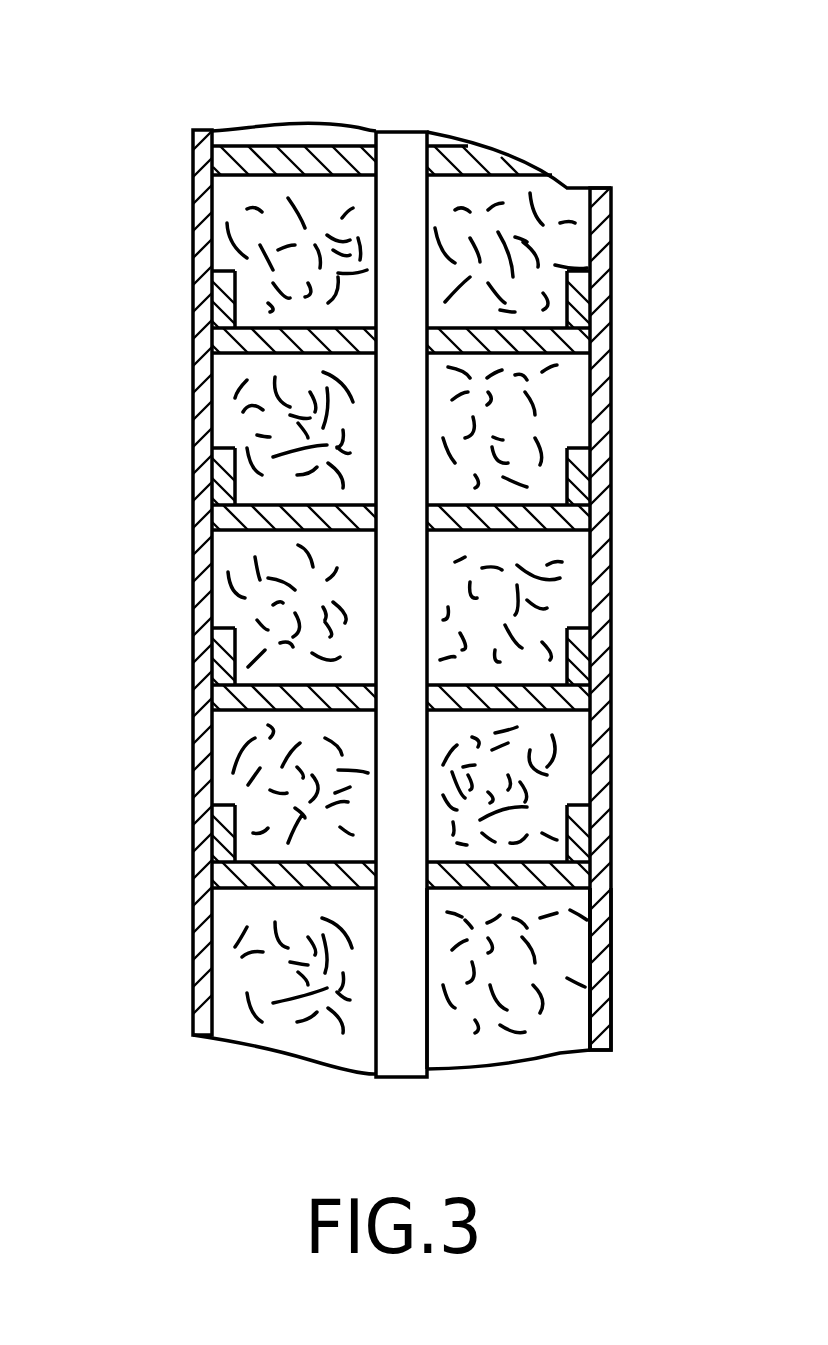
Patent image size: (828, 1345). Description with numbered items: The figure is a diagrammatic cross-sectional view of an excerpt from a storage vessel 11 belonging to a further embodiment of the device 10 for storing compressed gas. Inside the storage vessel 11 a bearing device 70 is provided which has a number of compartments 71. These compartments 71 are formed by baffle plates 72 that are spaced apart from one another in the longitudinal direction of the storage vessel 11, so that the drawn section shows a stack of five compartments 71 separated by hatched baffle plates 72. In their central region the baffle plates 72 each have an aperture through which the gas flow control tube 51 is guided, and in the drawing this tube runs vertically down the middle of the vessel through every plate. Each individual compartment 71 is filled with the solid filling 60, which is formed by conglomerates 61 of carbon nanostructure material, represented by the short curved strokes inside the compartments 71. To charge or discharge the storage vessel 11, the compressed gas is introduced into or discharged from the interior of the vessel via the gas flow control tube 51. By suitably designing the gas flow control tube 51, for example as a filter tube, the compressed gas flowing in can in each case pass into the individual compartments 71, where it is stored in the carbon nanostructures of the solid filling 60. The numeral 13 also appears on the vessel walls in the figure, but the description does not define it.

The device for storing compressed gas 10 is at (148, 99).
The storage vessel 11 is at (193, 232).
The side wall 13 is at (612, 330).
The gas flow control tube 51 is at (402, 142).
The solid filling 60 is at (205, 537).
The conglomerates of carbon nanostructure material 61 is at (525, 585).
The bearing device 70 is at (520, 893).
The compartments 71 is at (590, 928).
The baffle plates 72 is at (517, 330).